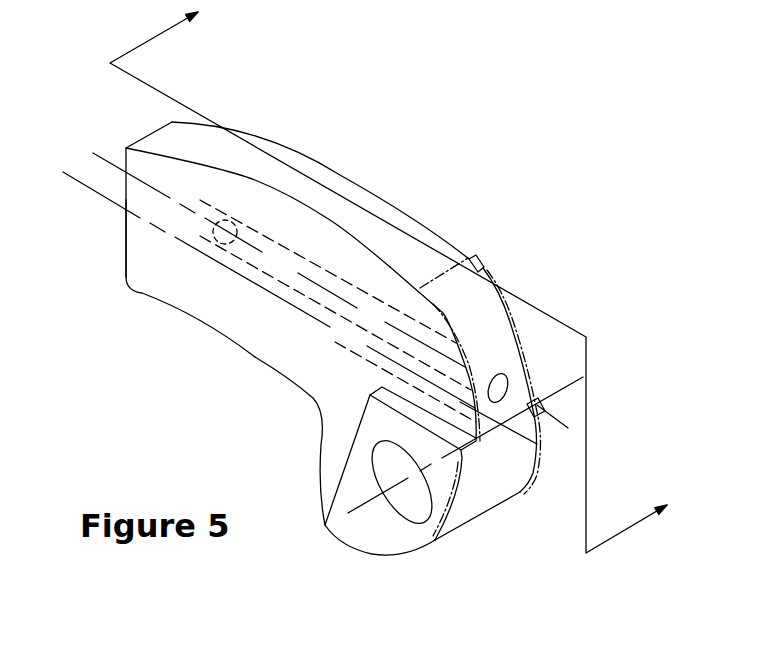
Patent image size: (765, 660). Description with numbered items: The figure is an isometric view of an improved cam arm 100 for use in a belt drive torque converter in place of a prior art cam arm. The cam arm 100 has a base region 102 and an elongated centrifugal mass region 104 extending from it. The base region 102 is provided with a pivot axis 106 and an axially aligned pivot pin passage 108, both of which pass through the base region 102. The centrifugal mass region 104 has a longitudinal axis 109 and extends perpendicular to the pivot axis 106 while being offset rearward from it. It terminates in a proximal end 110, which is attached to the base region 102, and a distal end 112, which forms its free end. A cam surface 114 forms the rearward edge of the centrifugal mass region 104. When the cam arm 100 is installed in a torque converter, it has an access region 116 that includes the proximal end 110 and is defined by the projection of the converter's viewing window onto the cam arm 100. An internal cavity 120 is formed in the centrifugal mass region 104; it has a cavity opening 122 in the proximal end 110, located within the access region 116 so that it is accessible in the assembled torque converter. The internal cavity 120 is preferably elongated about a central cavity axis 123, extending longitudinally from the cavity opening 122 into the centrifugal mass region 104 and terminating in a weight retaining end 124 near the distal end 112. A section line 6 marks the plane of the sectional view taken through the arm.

The section line 6- 6 is at (387, 287).
The cam arm 100 is at (462, 180).
The base region 102 is at (500, 513).
The centrifugal mass region 104 is at (332, 163).
The pivot axis 106 is at (268, 562).
The pivot pin passage 108 is at (410, 502).
The longitudinal axis 109 is at (175, 235).
The proximal end 110 is at (470, 312).
The distal end 112 is at (137, 255).
The cam surface 114 is at (372, 200).
The access region 116 is at (510, 312).
The internal cavity 120 is at (360, 290).
The cavity opening 122 is at (507, 383).
The central cavity axis 123 is at (110, 163).
The weight retaining end 124 is at (218, 243).